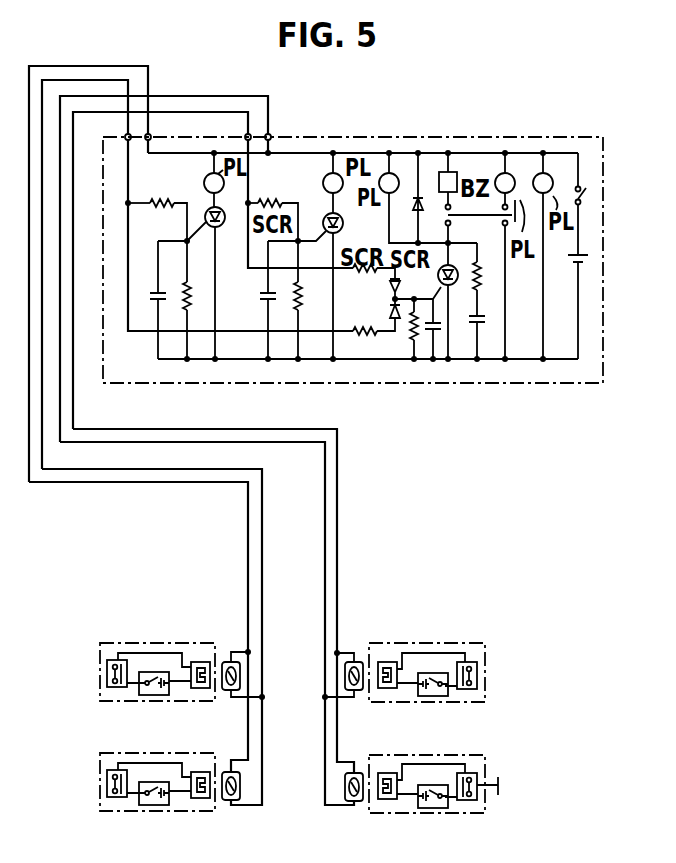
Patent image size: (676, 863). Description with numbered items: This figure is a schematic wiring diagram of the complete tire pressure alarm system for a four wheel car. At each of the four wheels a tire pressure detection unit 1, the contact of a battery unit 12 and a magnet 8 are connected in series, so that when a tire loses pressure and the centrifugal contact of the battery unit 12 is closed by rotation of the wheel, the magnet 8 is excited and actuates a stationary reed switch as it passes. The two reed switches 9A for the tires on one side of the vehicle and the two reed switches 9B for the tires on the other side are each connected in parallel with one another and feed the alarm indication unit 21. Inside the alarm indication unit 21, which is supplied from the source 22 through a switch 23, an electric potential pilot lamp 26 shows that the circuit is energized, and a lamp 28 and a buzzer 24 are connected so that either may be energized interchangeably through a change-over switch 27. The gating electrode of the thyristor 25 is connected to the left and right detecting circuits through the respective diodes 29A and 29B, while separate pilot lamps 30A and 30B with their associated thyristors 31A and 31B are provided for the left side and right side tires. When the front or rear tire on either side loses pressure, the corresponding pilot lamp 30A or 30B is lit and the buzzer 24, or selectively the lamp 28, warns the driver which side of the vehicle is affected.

The tire pressure detection unit 1 is at (107, 682).
The magnet 8 is at (200, 662).
The reed switch 9A is at (231, 662).
The reed switch 9B is at (354, 662).
The battery unit 12 is at (156, 695).
The alarm indication unit 21 is at (313, 137).
The source 22 is at (566, 307).
The power switch 23 is at (583, 200).
The buzzer 24 is at (462, 169).
The thyristor 25 is at (433, 312).
The electric potential pilot lamp 26 is at (547, 172).
The change-over switch 27 is at (481, 232).
The lamp 28 is at (512, 172).
The diode 29A is at (369, 317).
The diode 29B is at (369, 283).
The pilot lamp 30A is at (205, 182).
The pilot lamp 30B is at (323, 182).
The thyristor 31A is at (205, 219).
The thyristor 31B is at (315, 279).